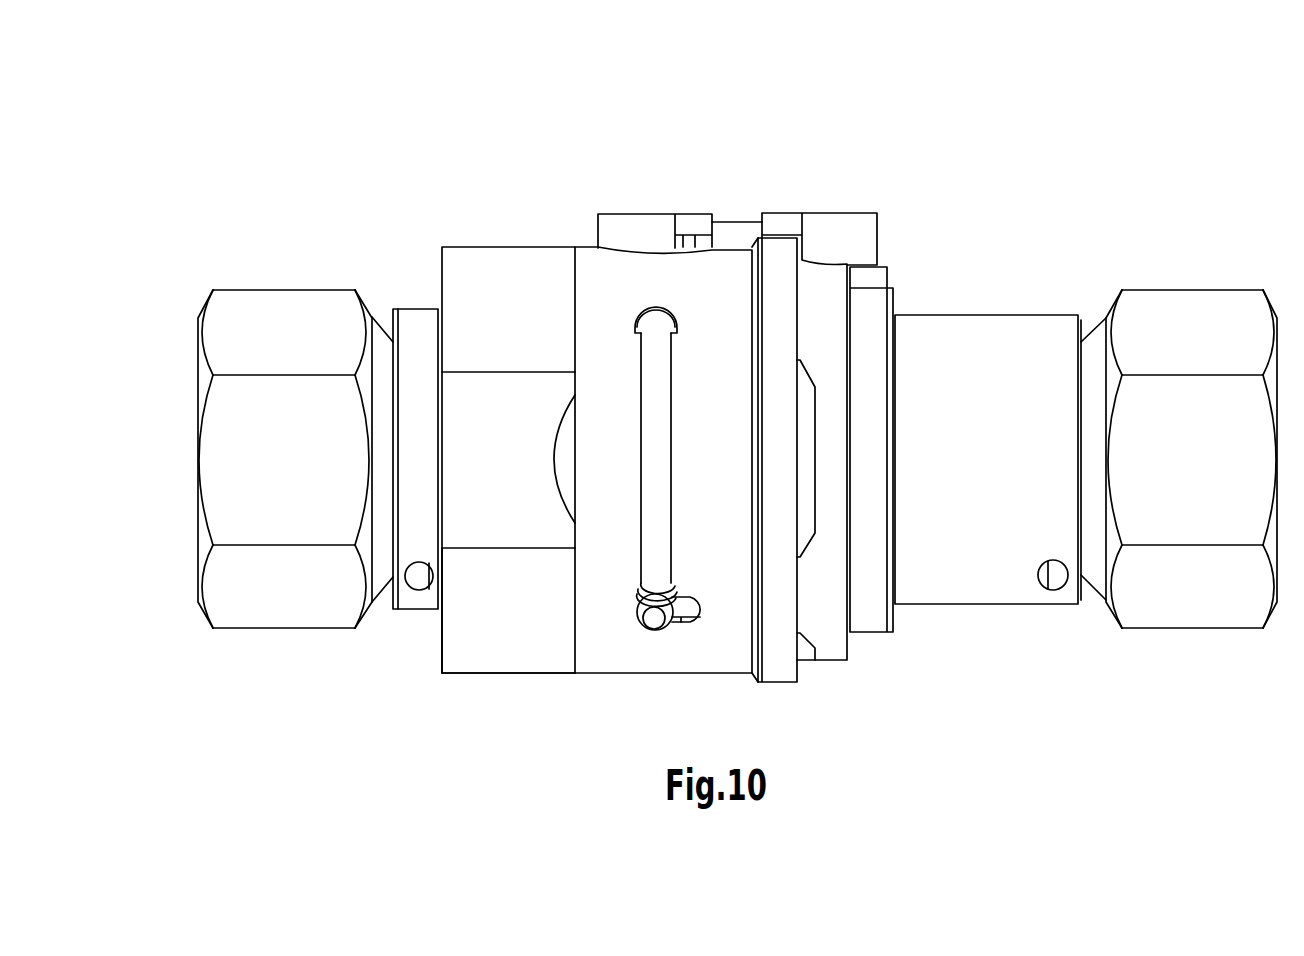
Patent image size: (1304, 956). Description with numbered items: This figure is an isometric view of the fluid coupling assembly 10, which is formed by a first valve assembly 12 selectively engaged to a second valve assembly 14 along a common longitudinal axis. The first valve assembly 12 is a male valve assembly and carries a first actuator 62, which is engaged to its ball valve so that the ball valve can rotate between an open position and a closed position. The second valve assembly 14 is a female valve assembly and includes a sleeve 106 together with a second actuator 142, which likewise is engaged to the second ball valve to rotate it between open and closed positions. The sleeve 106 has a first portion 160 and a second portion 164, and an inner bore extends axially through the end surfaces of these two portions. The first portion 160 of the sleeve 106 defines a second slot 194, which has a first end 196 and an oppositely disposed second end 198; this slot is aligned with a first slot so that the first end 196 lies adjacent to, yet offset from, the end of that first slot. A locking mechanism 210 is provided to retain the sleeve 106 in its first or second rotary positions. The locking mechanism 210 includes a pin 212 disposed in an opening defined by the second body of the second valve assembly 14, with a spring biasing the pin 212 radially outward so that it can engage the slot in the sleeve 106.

The fluid coupling assembly 10 is at (428, 145).
The first valve assembly 12 is at (1047, 245).
The second valve assembly 14 is at (381, 264).
The first actuator 62 is at (841, 207).
The sleeve 106 is at (563, 235).
The second actuator 142 is at (646, 209).
The first portion 160 is at (722, 676).
The second portion 164 is at (468, 676).
The second slot 194 is at (639, 478).
The first end 196 is at (745, 460).
The second end 198 is at (687, 623).
The locking mechanism 210 is at (633, 630).
The pin 212 is at (677, 594).